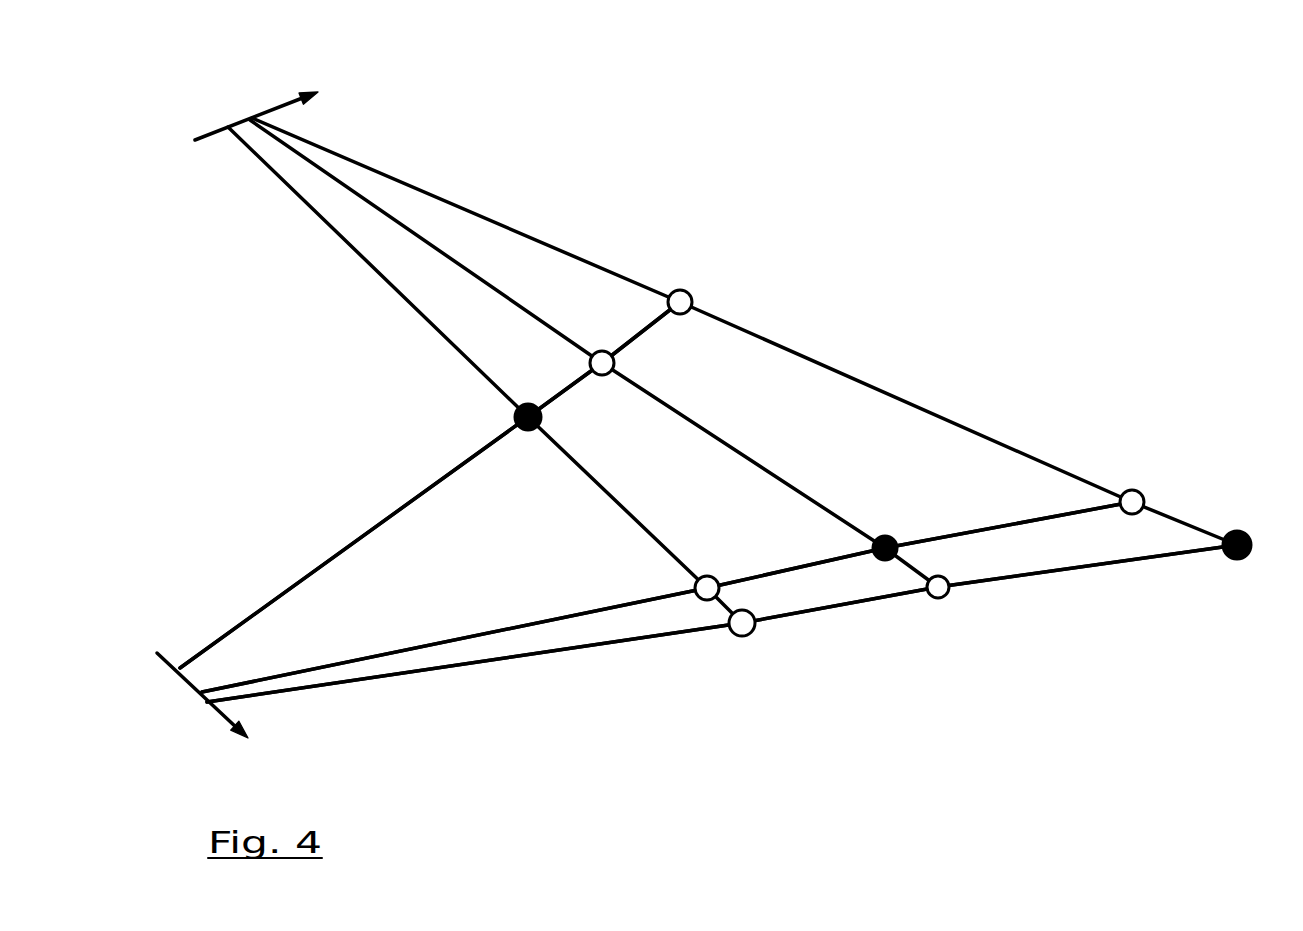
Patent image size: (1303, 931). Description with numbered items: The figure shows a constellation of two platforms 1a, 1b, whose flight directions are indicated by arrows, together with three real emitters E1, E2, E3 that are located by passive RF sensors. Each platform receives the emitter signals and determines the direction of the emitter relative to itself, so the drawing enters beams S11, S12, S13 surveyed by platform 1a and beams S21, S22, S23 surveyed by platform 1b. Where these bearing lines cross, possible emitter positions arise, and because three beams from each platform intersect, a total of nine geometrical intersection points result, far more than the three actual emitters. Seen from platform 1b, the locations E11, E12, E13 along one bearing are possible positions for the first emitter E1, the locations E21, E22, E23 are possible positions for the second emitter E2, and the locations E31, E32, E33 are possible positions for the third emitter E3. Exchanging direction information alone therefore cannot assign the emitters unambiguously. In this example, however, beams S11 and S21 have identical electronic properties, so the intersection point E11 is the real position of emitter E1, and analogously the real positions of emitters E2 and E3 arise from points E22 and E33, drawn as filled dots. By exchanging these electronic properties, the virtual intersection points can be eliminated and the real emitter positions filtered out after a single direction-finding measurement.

The platform 1a is at (278, 100).
The platform 1b is at (192, 690).
The beam S11 is at (388, 287).
The beam S12 is at (458, 267).
The beam S13 is at (513, 230).
The beam S21 is at (347, 548).
The beam S22 is at (443, 643).
The beam S23 is at (483, 662).
The first emitter E1 is at (358, 428).
The second emitter E2 is at (1048, 383).
The third emitter E3 is at (1088, 652).
The intersection point E11 is at (527, 430).
The intersection point E12 is at (616, 362).
The intersection point E13 is at (693, 293).
The intersection point E21 is at (695, 583).
The intersection point E22 is at (885, 536).
The intersection point E23 is at (1138, 490).
The intersection point E31 is at (730, 637).
The intersection point E32 is at (933, 600).
The intersection point E33 is at (1232, 560).